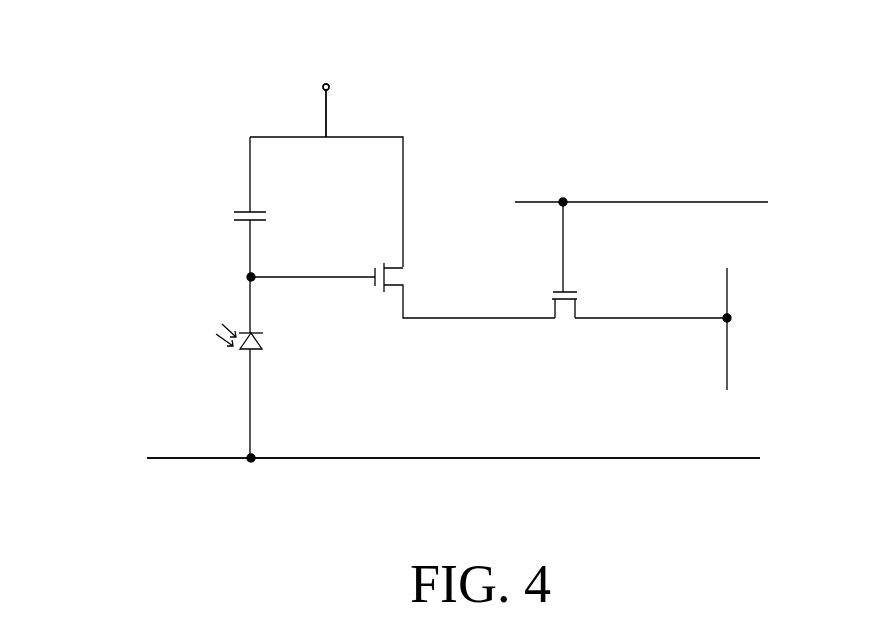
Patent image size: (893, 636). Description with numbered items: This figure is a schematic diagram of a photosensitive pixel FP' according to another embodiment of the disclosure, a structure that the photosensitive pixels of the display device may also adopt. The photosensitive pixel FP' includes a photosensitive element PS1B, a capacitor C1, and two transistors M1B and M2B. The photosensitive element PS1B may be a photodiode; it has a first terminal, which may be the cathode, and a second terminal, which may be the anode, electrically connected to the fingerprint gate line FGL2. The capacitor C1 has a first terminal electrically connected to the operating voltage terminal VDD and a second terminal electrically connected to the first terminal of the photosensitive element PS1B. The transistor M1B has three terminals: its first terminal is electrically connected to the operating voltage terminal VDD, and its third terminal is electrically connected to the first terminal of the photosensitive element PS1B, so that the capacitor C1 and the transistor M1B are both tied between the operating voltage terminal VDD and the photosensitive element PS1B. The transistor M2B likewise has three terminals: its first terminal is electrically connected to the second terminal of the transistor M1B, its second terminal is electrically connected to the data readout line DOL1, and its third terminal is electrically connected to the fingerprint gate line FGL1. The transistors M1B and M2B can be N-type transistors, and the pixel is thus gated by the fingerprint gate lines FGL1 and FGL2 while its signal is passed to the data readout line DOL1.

The photosensitive pixel FP' is at (408, 242).
The operating voltage terminal VDD is at (326, 93).
The capacitor C1 is at (266, 215).
The transistor M1B is at (383, 264).
The photosensitive element PS1B is at (263, 341).
The transistor M2B is at (557, 290).
The fingerprint gate line FGL1 is at (683, 202).
The data readout line DOL1 is at (729, 290).
The fingerprint gate line FGL2 is at (420, 459).